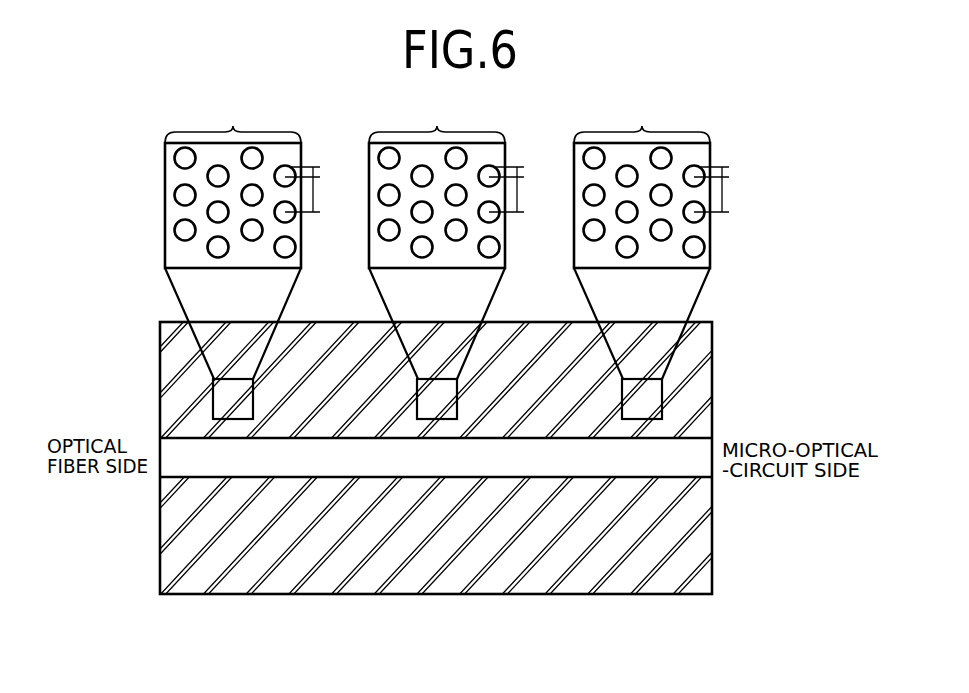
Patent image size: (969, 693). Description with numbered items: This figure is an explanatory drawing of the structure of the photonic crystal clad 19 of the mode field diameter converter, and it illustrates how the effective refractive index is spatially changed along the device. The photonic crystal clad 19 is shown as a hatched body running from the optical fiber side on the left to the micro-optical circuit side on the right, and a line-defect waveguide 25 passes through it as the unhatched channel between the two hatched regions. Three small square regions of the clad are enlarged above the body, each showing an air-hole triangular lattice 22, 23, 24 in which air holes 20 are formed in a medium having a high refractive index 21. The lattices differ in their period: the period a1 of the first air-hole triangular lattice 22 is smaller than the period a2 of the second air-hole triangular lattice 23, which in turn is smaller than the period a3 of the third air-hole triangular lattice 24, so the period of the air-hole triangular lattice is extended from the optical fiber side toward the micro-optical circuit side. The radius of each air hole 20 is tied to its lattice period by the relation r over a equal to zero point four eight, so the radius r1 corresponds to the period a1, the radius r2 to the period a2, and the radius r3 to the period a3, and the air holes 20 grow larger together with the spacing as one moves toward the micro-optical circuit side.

The photonic crystal clad 19 is at (162, 438).
The air hole 20 is at (217, 250).
The medium having a high refractive index 21 is at (250, 262).
The air-hole triangular lattice 22 is at (260, 263).
The air-hole triangular lattice 23 is at (464, 263).
The air-hole triangular lattice 24 is at (669, 263).
The line-defect waveguide 25 is at (389, 468).
The air hole radius r1 is at (315, 171).
The lattice period a1 is at (315, 196).
The air hole radius r2 is at (523, 184).
The lattice period a2 is at (539, 194).
The air hole radius r3 is at (728, 184).
The lattice period a3 is at (744, 194).